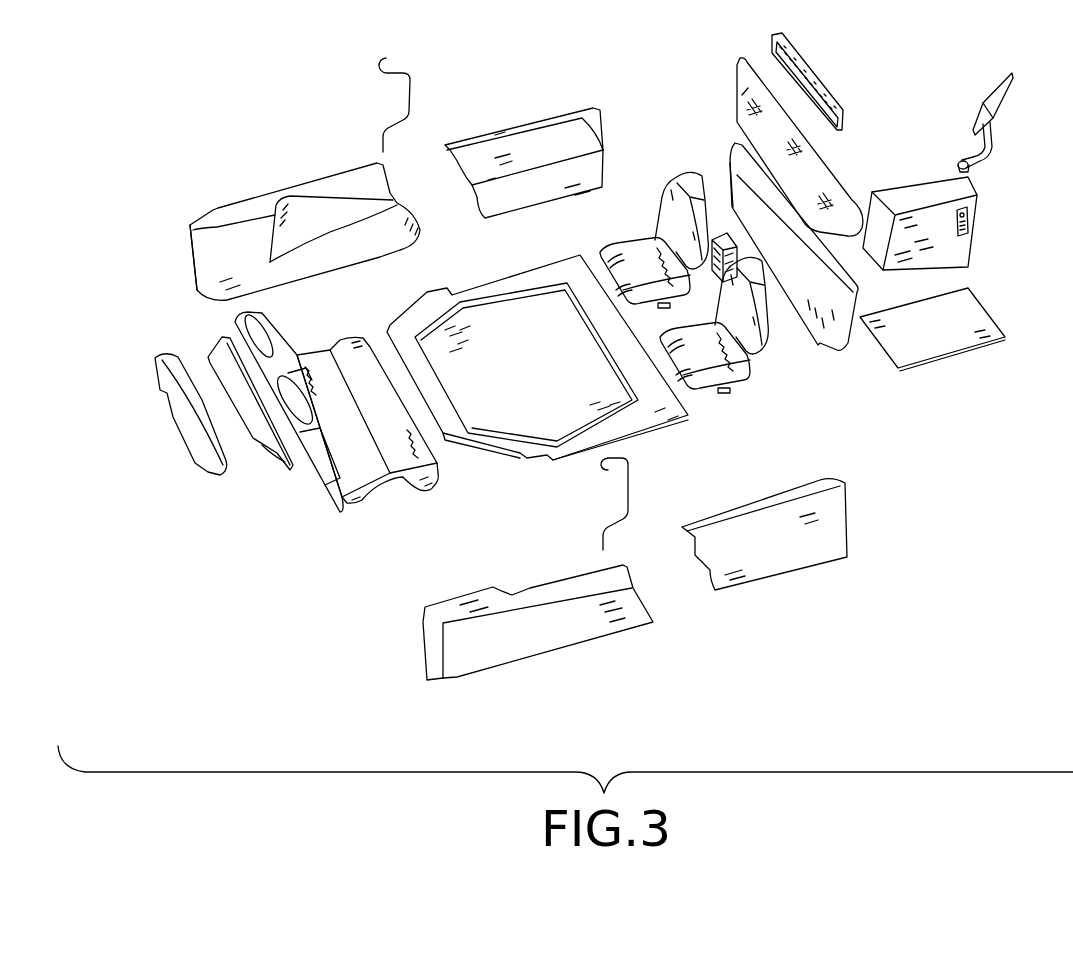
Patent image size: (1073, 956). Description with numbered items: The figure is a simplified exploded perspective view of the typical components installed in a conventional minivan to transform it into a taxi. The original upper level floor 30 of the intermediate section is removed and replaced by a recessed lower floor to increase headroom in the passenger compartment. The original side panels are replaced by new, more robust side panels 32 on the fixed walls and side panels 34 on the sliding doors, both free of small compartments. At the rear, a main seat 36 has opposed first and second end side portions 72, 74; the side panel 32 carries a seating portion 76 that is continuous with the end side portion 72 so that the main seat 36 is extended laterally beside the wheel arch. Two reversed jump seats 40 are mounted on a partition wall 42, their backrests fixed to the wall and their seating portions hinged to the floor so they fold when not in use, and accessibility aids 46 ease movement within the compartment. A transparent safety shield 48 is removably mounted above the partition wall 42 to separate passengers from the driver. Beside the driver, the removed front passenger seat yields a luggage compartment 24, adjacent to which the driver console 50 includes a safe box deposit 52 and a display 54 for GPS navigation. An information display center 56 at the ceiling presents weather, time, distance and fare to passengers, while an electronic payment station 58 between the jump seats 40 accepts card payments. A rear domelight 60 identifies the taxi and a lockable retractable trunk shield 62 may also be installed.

The luggage compartment 24 is at (946, 377).
The upper level floor 30 is at (517, 312).
The first rear interior side panel 32 is at (255, 197).
The side panel 34 is at (540, 127).
The main seat 36 is at (343, 505).
The jump seat 40 is at (623, 242).
The partition wall 42 is at (818, 332).
The accessibility aids 46 is at (412, 72).
The transparent safety shield 48 is at (733, 90).
The driver console 50 is at (917, 177).
The safe box deposit 52 is at (967, 235).
The display 54 is at (1003, 75).
The electronic communication and/or information display center 56 is at (820, 80).
The electronic payment station 58 is at (722, 232).
The rear domelight 60 is at (210, 470).
The lockable retractable trunk shield 62 is at (270, 458).
The first end side portion 72 is at (347, 340).
The second end side portion 74 is at (403, 483).
The first seating portion 76 is at (327, 230).